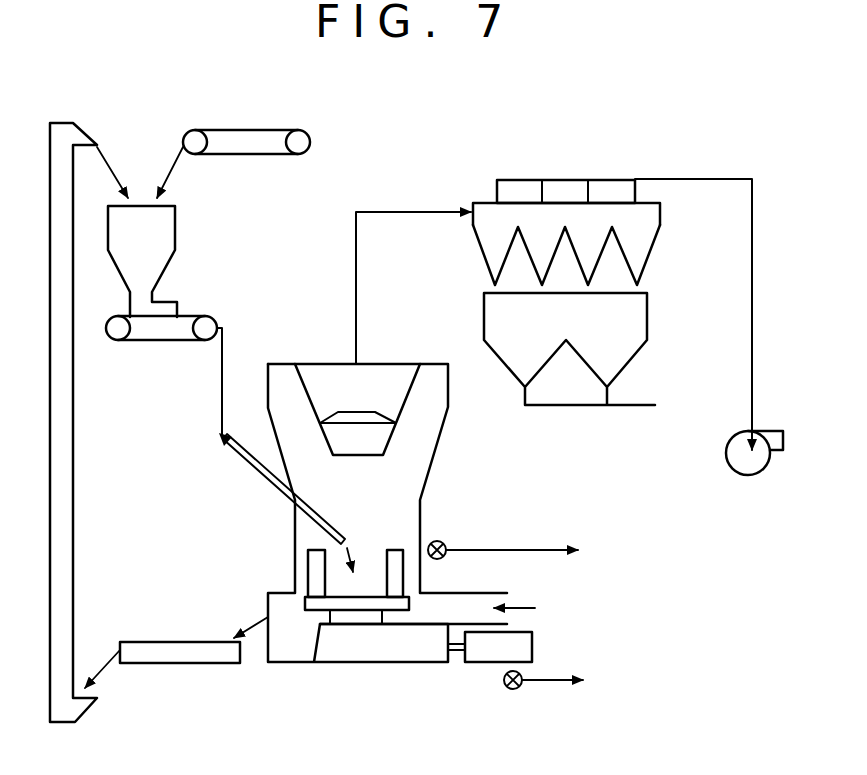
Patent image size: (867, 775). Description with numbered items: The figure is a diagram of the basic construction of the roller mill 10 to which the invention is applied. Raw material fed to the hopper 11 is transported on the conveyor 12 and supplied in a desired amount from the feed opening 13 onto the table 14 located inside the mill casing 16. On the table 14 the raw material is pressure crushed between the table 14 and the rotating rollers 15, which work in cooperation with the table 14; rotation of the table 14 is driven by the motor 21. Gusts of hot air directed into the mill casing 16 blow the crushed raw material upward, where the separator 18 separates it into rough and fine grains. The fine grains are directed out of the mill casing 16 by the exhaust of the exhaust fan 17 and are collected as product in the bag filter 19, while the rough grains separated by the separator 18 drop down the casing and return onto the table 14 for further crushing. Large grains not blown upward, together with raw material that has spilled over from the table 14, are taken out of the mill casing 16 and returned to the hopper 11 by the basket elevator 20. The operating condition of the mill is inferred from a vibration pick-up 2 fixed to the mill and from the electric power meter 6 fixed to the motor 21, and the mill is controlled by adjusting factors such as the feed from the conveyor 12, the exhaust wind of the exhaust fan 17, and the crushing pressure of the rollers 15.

The vibration pick-up 2 is at (440, 540).
The electric power meter 6 is at (515, 690).
The roller mill 10 is at (415, 156).
The hopper 11 is at (178, 222).
The conveyor 12 is at (163, 335).
The feed opening 13 is at (255, 468).
The table 14 is at (317, 603).
The rollers 15 is at (308, 558).
The mill casing 16 is at (435, 457).
The exhaust fan 17 is at (765, 472).
The separator 18 is at (408, 396).
The bag filter 19 is at (470, 252).
The basket elevator 20 is at (73, 468).
The motor 21 is at (483, 663).